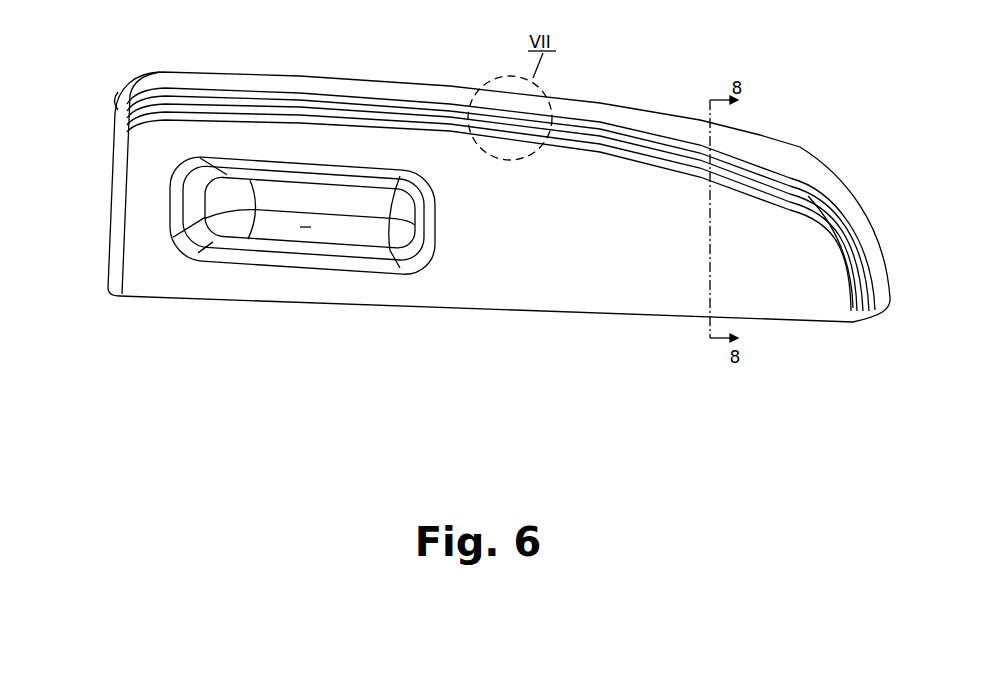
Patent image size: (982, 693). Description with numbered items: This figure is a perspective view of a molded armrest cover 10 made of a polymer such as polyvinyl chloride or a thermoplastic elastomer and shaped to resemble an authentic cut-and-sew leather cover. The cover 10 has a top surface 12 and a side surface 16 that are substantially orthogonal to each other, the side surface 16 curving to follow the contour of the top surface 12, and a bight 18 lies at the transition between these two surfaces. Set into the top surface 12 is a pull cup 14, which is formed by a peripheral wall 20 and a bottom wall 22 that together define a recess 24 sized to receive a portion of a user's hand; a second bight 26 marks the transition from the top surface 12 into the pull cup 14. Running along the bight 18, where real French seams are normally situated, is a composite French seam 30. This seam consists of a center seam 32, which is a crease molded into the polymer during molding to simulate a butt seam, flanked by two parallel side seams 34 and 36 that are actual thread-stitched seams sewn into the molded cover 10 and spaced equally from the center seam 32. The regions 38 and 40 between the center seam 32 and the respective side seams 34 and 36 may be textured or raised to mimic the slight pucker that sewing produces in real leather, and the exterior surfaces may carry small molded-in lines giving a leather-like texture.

The molded armrest cover 10 is at (682, 76).
The top surface 12 is at (592, 280).
The pull cup 14 is at (287, 271).
The side surface 16 is at (613, 120).
The bight 18 is at (762, 165).
The peripheral wall 20 is at (248, 245).
The bottom wall 22 is at (347, 232).
The recess 24 is at (305, 230).
The second bight 26 is at (187, 245).
The composite French seam 30 is at (112, 100).
The center seam 32 is at (150, 96).
The side seam 34 is at (190, 92).
The side seam 36 is at (136, 113).
The region 38 is at (196, 101).
The region 40 is at (158, 108).